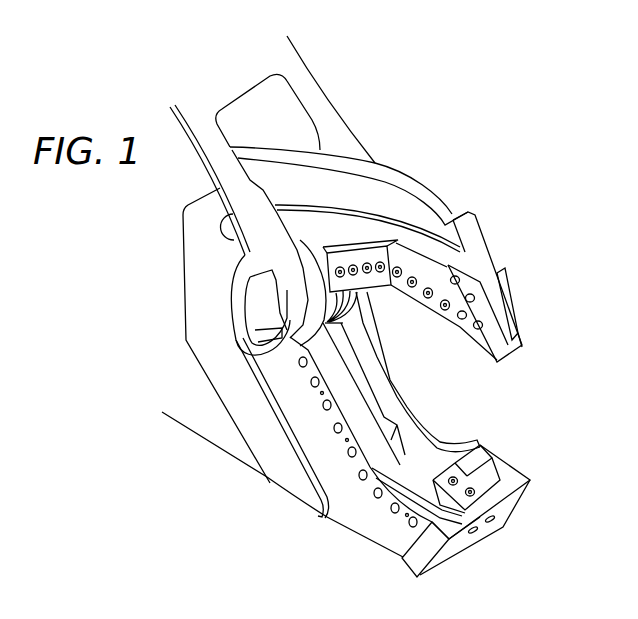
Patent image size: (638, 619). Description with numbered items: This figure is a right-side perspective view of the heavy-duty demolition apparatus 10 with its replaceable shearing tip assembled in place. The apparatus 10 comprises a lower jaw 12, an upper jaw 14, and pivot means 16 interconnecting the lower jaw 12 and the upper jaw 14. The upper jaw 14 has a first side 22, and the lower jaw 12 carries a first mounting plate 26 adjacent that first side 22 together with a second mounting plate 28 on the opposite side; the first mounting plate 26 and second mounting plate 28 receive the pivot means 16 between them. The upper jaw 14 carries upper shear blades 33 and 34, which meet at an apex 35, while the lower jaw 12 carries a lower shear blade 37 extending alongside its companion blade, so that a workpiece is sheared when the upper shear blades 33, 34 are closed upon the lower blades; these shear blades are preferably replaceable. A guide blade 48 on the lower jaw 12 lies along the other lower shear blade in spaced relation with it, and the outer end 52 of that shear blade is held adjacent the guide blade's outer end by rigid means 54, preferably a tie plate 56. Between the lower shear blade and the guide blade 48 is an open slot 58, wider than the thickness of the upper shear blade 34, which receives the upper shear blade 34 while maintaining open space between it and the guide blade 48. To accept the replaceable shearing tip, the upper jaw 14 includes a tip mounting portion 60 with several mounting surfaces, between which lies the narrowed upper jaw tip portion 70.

The heavy-duty demolition apparatus 10 is at (425, 95).
The lower jaw 12 is at (341, 527).
The upper jaw 14 is at (420, 185).
The pivot means 16 is at (223, 228).
The first side 22 is at (285, 142).
The first mounting plate 26 is at (230, 342).
The second mounting plate 28 is at (398, 384).
The upper shear blade 33 is at (370, 280).
The upper shear blade 34 is at (437, 303).
The apex 35 is at (384, 243).
The lower shear blade 37 is at (386, 528).
The guide blade 48 is at (440, 438).
The outer end of the shear blade 52 is at (449, 539).
The rigid means 54 is at (473, 545).
The tie plate 56 is at (521, 553).
The open slot 58 is at (473, 473).
The tip mounting portion 60 is at (500, 261).
The narrowed upper jaw tip portion 70 is at (498, 288).